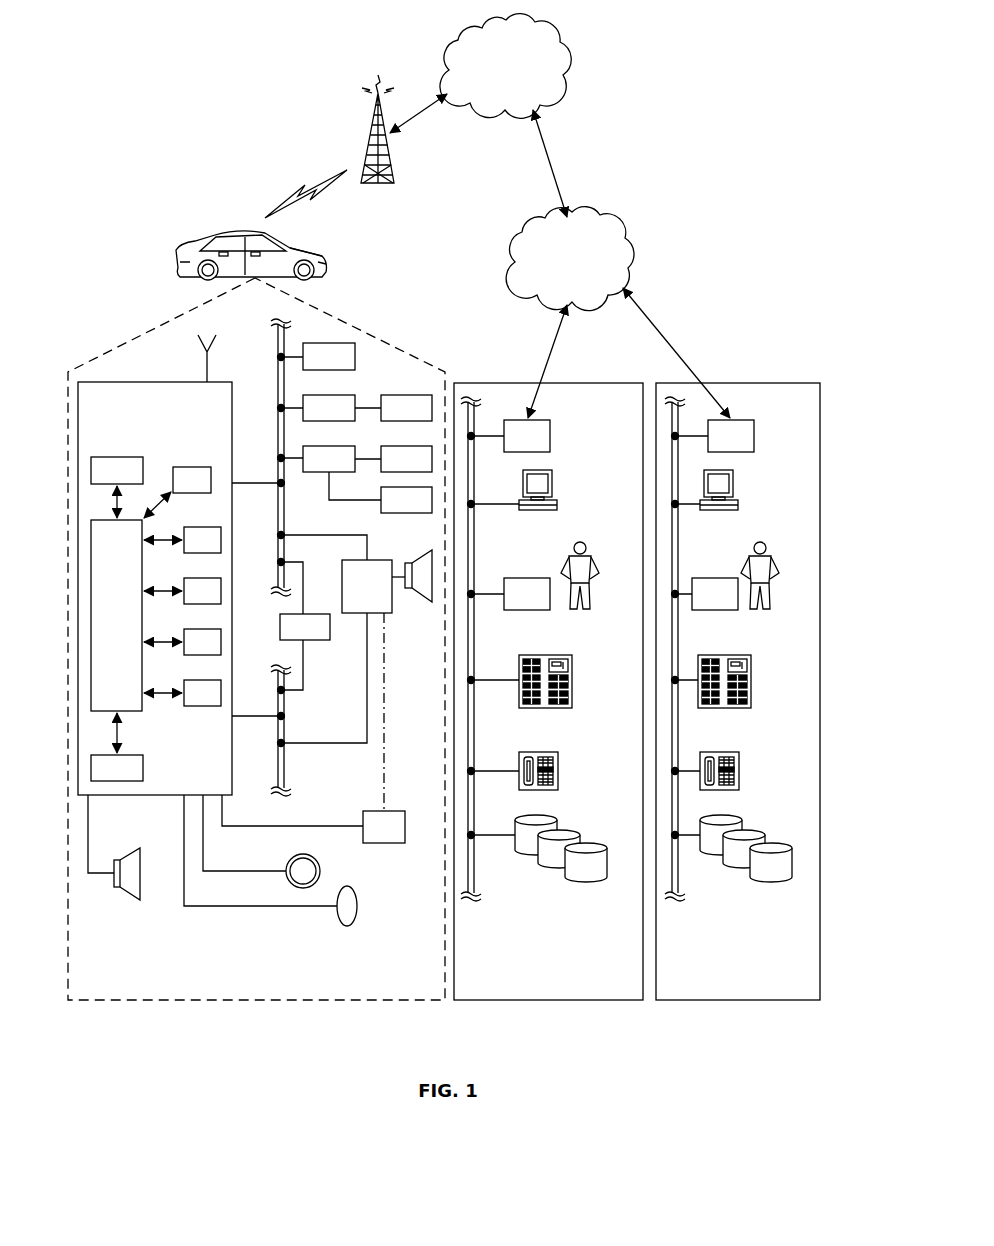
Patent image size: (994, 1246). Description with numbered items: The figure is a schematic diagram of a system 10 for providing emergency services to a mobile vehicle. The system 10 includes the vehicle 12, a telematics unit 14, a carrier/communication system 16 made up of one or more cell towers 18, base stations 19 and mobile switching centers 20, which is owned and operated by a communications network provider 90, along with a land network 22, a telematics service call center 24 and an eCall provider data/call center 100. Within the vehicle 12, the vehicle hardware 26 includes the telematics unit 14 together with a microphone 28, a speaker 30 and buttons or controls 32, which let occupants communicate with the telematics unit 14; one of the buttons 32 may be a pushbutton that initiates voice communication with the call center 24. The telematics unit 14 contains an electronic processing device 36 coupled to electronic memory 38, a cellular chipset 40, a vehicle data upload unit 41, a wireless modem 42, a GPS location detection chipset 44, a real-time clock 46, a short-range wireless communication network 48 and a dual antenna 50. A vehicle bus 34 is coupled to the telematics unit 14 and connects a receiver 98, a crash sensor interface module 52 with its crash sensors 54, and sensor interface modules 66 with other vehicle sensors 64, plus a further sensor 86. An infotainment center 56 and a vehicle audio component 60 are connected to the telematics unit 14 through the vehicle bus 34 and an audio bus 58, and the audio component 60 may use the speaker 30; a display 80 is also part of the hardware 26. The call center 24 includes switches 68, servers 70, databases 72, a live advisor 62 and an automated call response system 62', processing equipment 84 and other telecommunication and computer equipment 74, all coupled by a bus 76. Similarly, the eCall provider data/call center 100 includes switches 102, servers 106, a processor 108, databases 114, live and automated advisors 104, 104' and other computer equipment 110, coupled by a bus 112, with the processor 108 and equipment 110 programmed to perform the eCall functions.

The system 10 is at (633, 108).
The vehicle 12 is at (247, 233).
The telematics unit 14 is at (232, 568).
The carrier/communication system 16 is at (474, 165).
The cell tower 18 is at (365, 143).
The base station 19 is at (505, 66).
The mobile switching center 20 is at (478, 79).
The land network 22 is at (563, 271).
The telematics service/call center 24 is at (548, 1000).
The vehicle hardware 26 is at (243, 1000).
The microphone 28 is at (357, 906).
The speaker 30 is at (128, 903).
The buttons, knobs, switches, keyboards, and/or controls 32 is at (321, 871).
The vehicle bus 34 is at (286, 522).
The electronic processing device 36 is at (109, 623).
The electronic memory 38 is at (109, 777).
The cellular chipset/component 40 is at (109, 479).
The vehicle data upload unit/system 41 is at (184, 489).
The wireless modem 42 is at (194, 549).
The location detection chipset/component 44 is at (194, 600).
The real-time clock 46 is at (194, 651).
The short-range wireless communication network 48 is at (194, 702).
The dual antenna 50 is at (208, 372).
The crash and/or collision sensor interface module 52 is at (321, 417).
The crash sensor 54 is at (398, 417).
The infotainment center 56 is at (297, 636).
The audio bus 58 is at (276, 733).
The vehicle audio component 60 is at (359, 596).
The live advisor 62 is at (598, 563).
The automated call response system 62' is at (571, 481).
The vehicle sensor 64 is at (398, 468).
The sensor interface module 66 is at (321, 468).
The switch 68 is at (519, 446).
The server 70 is at (573, 681).
The database 72 is at (594, 847).
The telecommunication and computer equipment 74 is at (559, 771).
The bus 76 is at (474, 862).
The display 80 is at (376, 836).
The processing equipment 84 is at (519, 604).
The sensor 86 is at (398, 509).
The communications network provider 90 is at (442, 120).
The receiver 98 is at (321, 365).
The eCall provider data/call center 100 is at (737, 1000).
The switch 102 is at (719, 446).
The live advisor 104 is at (777, 561).
The automated advisor 104' is at (756, 483).
The server 106 is at (751, 680).
The processor 108 is at (703, 604).
The telecommunication and computer equipment 110 is at (739, 771).
The bus 112 is at (678, 873).
The database 114 is at (775, 845).